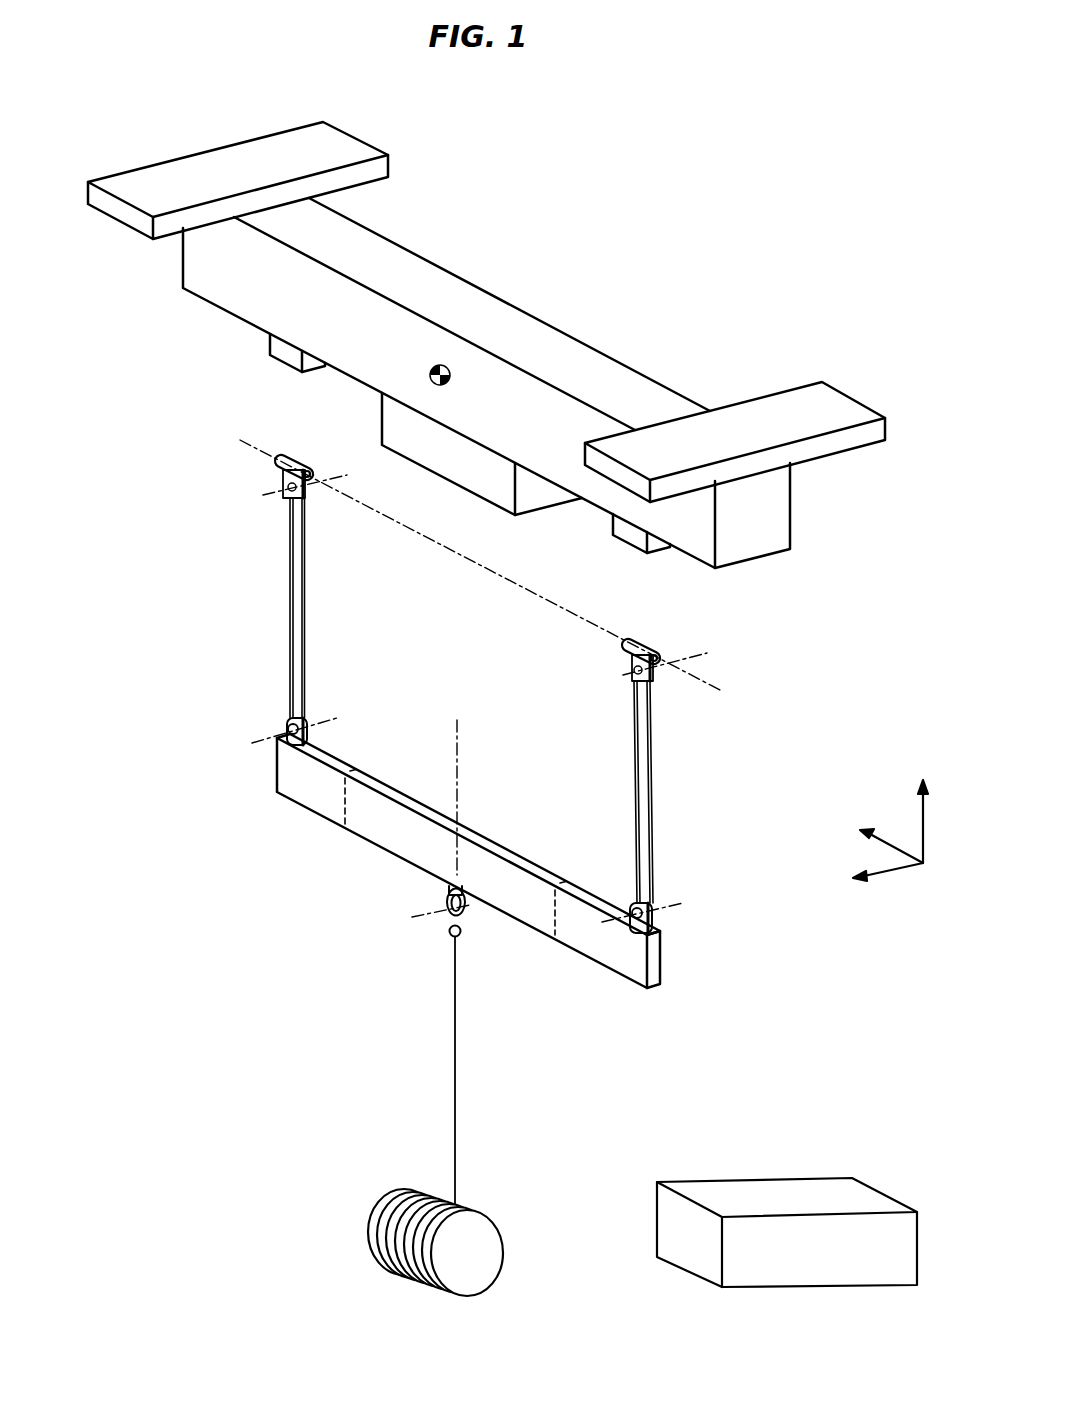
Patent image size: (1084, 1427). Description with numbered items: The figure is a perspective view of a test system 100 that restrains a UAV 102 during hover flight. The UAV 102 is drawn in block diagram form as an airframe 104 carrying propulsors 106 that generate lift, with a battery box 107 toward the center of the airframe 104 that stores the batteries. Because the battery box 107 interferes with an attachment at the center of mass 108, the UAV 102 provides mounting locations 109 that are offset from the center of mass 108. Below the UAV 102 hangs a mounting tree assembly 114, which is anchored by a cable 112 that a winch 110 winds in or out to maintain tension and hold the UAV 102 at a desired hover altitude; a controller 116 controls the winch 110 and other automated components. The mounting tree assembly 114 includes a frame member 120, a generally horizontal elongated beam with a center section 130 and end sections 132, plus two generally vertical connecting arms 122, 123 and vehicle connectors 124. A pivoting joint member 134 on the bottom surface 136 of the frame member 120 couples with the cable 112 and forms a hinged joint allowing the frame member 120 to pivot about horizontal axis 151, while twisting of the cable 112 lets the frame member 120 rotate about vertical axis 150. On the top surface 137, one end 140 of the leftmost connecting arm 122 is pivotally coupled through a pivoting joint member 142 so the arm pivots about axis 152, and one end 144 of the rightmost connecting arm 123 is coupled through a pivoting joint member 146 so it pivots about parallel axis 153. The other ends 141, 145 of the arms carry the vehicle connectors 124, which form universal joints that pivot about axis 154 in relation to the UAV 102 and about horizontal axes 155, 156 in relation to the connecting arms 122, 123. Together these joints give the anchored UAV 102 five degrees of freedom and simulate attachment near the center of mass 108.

The test system 100 is at (195, 1005).
The UAV 102 is at (548, 253).
The airframe 104 is at (622, 380).
The propulsors 106 is at (133, 185).
The battery box 107 is at (395, 428).
The center of mass (COM) 108 is at (432, 368).
The mounting locations 109 is at (292, 352).
The winch 110 is at (390, 1200).
The cable 112 is at (458, 1102).
The mounting tree assembly 114 is at (133, 482).
The controller 116 is at (782, 1181).
The frame member 120 is at (665, 965).
The connecting arm 122 is at (290, 620).
The connecting arm 123 is at (632, 782).
The vehicle connectors 124 is at (303, 467).
The center section 130 is at (370, 828).
The end sections 132 is at (305, 793).
The pivoting joint member 134 is at (465, 935).
The bottom surface 136 is at (400, 873).
The top surface 137 is at (398, 786).
The end of connecting arm 140 is at (322, 703).
The end of connecting arm 141 is at (262, 490).
The pivoting joint member 142 is at (287, 730).
The end of connecting arm 144 is at (655, 900).
The end of connecting arm 145 is at (672, 703).
The pivoting joint member 146 is at (625, 897).
The axis 150 is at (462, 738).
The axis 151 is at (415, 920).
The axis 152 is at (265, 745).
The axis 153 is at (686, 905).
The axis 154 is at (485, 573).
The axis 155 is at (275, 512).
The axis 156 is at (713, 668).